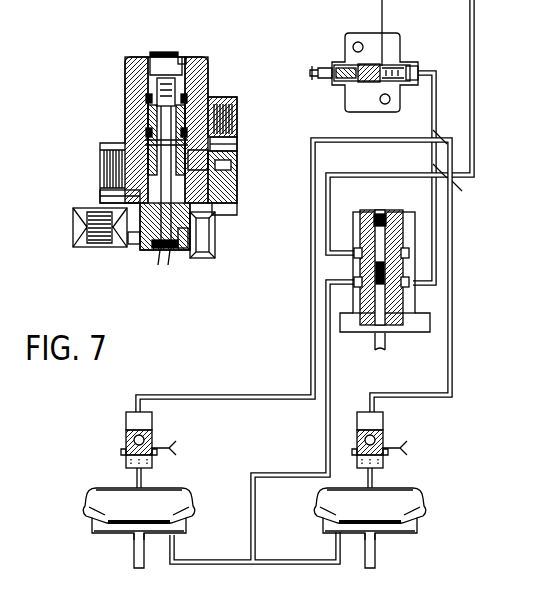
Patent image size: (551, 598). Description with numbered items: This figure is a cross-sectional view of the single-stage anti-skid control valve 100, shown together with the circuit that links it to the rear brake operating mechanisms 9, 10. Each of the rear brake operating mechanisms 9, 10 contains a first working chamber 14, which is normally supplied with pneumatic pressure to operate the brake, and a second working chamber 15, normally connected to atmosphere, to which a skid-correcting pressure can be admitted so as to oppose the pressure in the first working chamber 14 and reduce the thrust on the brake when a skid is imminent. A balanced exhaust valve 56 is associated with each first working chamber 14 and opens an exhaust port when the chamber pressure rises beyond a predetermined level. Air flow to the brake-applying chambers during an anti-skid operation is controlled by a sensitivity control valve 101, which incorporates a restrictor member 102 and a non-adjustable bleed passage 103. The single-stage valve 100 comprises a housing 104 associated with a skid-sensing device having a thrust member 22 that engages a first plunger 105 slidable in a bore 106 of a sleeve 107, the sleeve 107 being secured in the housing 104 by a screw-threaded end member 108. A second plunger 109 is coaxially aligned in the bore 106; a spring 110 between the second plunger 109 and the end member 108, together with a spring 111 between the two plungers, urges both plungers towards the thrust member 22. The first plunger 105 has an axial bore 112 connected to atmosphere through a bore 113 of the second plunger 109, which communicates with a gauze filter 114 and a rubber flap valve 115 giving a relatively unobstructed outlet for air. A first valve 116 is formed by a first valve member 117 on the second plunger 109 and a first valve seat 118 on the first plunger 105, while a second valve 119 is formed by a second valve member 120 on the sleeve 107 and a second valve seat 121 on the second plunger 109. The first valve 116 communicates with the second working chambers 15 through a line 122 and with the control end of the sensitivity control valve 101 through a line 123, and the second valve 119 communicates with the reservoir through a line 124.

The rear brake operating mechanism 9 is at (103, 530).
The rear brake operating mechanism 10 is at (403, 530).
The first working chamber 14 is at (178, 499).
The second working chamber 15 is at (180, 530).
The thrust member 22 is at (157, 265).
The balanced exhaust valve 56 is at (154, 433).
The single-stage valve 100 is at (260, 194).
The sensitivity control valve 101 is at (430, 33).
The restrictor member 102 is at (374, 85).
The bleed passage 103 is at (404, 66).
The housing 104 is at (216, 224).
The first plunger 105 is at (130, 250).
The bore 106 is at (188, 250).
The sleeve 107 is at (228, 214).
The screw-threaded end member 108 is at (212, 68).
The second plunger 109 is at (207, 97).
The spring 110 is at (142, 84).
The spring 111 is at (113, 243).
The axial bore 112 is at (141, 258).
The bore 113 is at (162, 111).
The gauze filter 114 is at (162, 52).
The rubber flap valve 115 is at (184, 57).
The first valve 116 is at (125, 170).
The first valve member 117 is at (195, 161).
The first valve seat 118 is at (228, 173).
The second valve 119 is at (176, 141).
The second valve member 120 is at (193, 128).
The second valve seat 121 is at (232, 126).
The line 122 is at (110, 183).
The line 123 is at (224, 178).
The line 124 is at (230, 114).